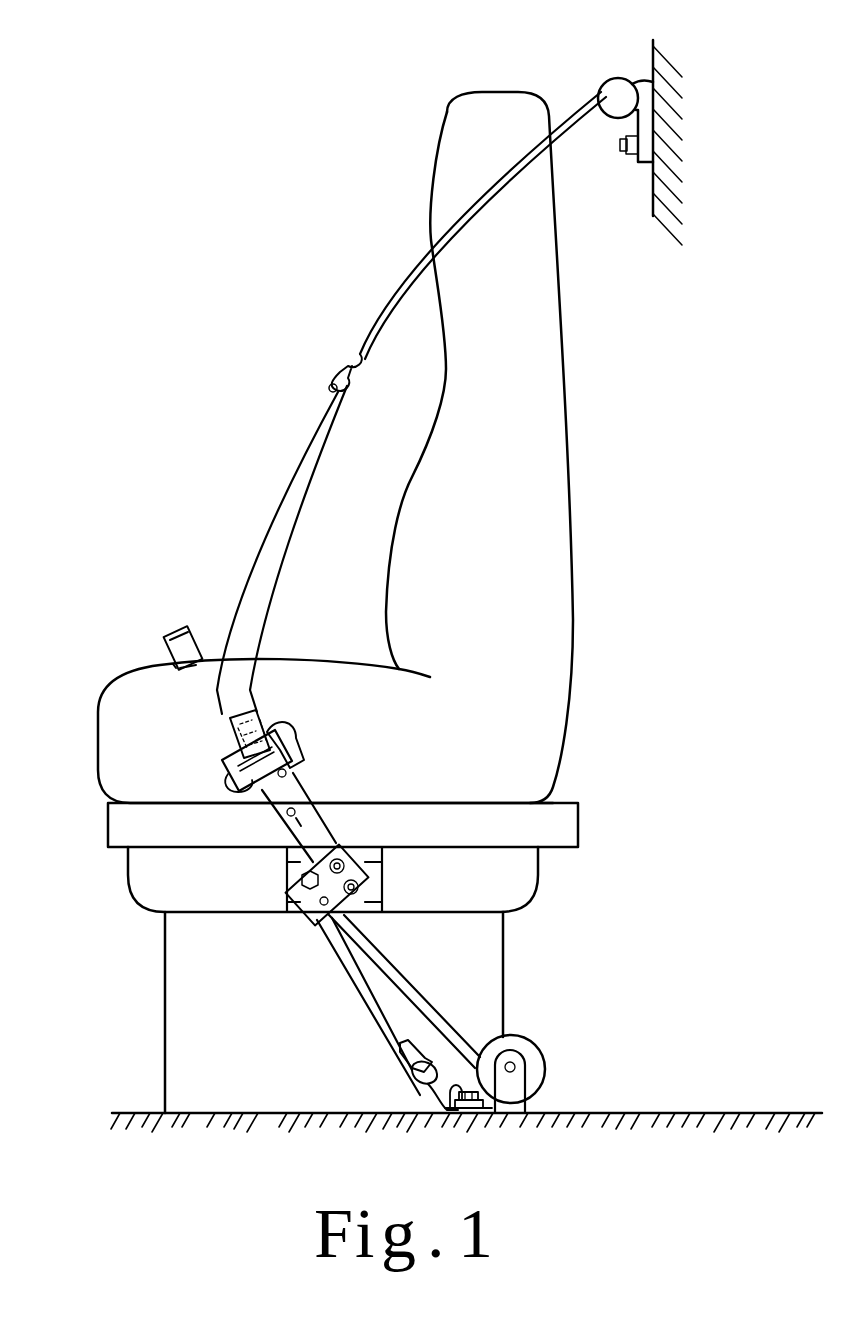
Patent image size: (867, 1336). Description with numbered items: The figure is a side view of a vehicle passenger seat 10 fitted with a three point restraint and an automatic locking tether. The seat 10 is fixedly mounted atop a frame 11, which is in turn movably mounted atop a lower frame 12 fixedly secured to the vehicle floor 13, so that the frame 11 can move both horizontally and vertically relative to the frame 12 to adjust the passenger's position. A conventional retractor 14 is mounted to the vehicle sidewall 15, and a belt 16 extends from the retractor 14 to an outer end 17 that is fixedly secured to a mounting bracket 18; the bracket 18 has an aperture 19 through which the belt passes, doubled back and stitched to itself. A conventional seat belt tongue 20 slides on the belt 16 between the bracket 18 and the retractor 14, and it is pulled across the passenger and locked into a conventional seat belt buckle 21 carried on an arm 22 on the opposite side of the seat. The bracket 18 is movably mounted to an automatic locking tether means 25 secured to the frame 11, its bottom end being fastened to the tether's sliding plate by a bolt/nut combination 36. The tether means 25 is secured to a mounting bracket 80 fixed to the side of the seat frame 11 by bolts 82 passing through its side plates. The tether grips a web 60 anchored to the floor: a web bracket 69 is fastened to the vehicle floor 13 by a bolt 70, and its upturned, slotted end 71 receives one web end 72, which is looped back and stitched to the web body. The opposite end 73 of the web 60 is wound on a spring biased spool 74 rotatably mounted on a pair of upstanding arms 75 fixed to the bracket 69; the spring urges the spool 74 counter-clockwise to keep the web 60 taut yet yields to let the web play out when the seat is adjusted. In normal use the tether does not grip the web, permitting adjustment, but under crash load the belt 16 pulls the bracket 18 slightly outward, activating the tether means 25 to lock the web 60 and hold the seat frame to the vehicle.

The passenger seat 10 is at (567, 525).
The frame 11 is at (570, 812).
The frame 12 is at (170, 1012).
The vehicle floor 13 is at (209, 1116).
The retractor 14 is at (620, 80).
The vehicle sidewall 15 is at (668, 86).
The belt 16 is at (311, 461).
The outer end 17 is at (233, 752).
The mounting bracket 18 is at (293, 753).
The aperture 19 is at (280, 746).
The seat belt tongue 20 is at (343, 392).
The seat belt buckle 21 is at (186, 626).
The arm 22 is at (173, 664).
The automatic locking tether means 25 is at (290, 798).
The bolt/nut combination 36 is at (240, 786).
The web 60 is at (378, 1028).
The web bracket 69 is at (488, 1120).
The bolt 70 is at (463, 1120).
The end 71 is at (423, 1097).
The web end 72 is at (423, 1060).
The opposite end 73 is at (390, 967).
The spring biased spool 74 is at (522, 1043).
The upstanding arms 75 is at (520, 1105).
The mounting bracket 80 is at (376, 886).
The bolts 82 is at (314, 908).